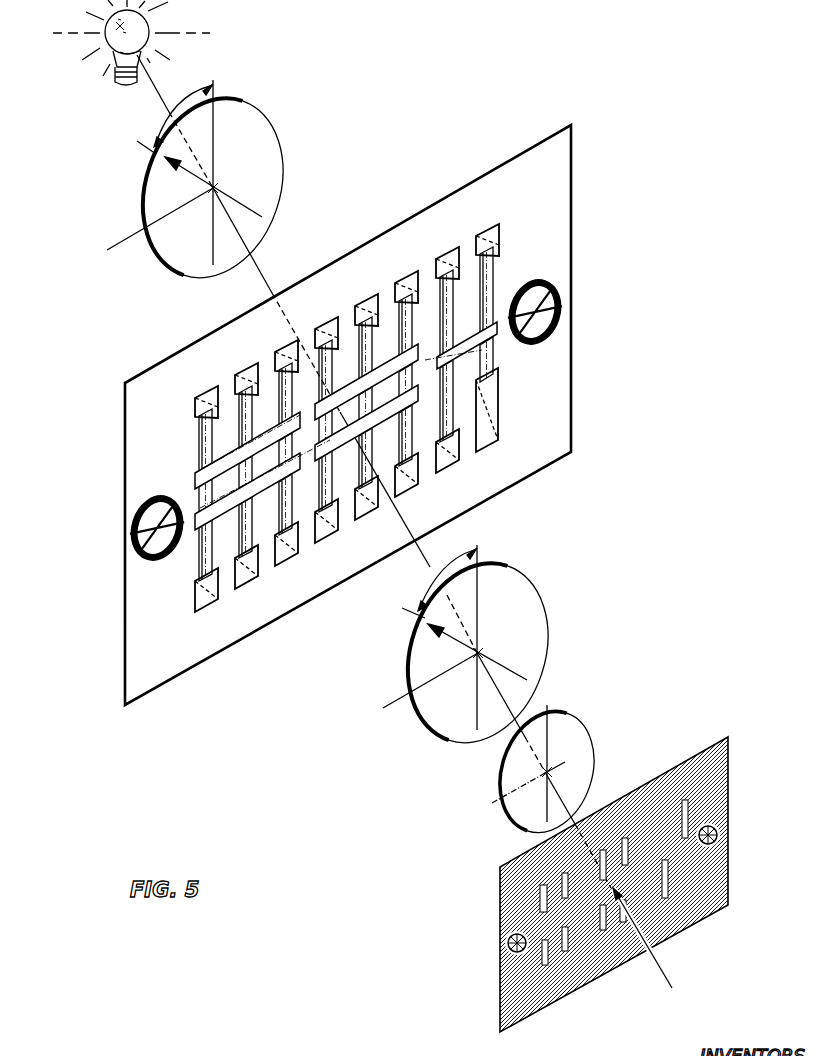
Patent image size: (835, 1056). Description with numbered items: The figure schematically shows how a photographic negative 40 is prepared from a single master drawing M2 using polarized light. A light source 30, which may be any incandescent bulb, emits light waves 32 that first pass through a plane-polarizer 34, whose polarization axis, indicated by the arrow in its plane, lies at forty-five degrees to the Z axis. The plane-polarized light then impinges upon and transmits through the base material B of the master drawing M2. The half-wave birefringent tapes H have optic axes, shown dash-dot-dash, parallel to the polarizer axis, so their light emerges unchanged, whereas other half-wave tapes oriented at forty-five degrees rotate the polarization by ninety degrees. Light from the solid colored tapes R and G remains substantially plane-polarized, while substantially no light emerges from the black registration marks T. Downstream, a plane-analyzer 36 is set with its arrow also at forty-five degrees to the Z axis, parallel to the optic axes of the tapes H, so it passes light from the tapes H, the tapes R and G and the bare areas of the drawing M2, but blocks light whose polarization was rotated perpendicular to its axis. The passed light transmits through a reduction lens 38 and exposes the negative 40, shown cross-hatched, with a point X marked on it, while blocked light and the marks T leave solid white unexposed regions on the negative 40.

The light source 30 is at (148, 33).
The optical axis / light beam 32 is at (160, 97).
The plane-polarizer 34 is at (282, 133).
The plane-analyzer 36 is at (527, 570).
The reduction lens 38 is at (578, 722).
The photographic negative 40 is at (636, 876).
The base material B is at (125, 432).
The master drawing M2 is at (364, 400).
The half-wave birefringent tapes H is at (195, 405).
The tapes G is at (293, 391).
The tapes R is at (453, 308).
The registration marks T is at (156, 497).
The image point X is at (644, 946).